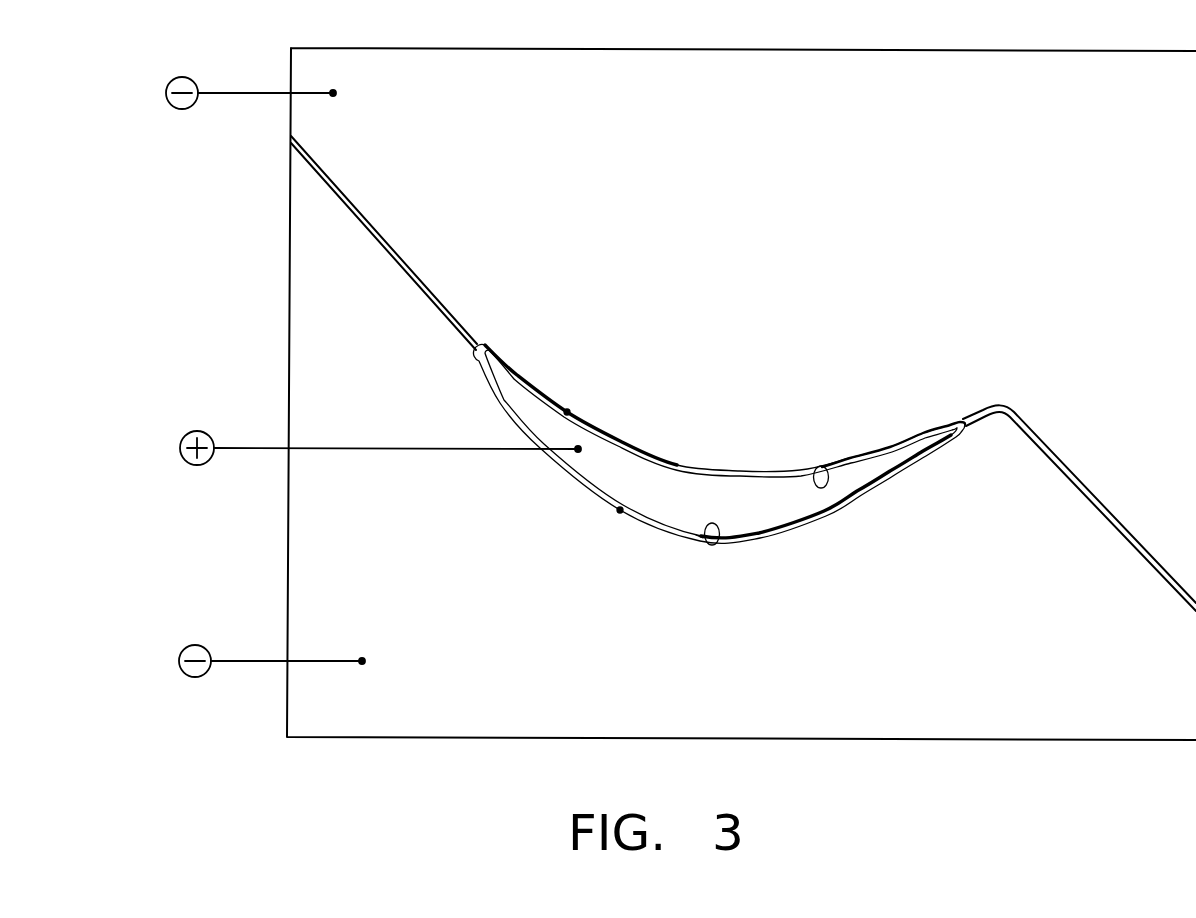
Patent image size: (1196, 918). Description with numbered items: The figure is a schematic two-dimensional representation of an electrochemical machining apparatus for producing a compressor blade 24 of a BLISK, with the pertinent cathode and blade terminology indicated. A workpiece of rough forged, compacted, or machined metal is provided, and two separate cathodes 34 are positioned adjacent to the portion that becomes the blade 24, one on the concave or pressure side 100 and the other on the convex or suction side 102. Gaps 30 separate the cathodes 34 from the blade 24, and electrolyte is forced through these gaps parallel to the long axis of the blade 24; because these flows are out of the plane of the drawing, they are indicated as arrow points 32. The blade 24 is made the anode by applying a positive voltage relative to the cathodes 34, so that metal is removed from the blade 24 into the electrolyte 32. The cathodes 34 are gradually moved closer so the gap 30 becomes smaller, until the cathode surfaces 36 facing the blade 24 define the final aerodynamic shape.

The compressor blade 24 is at (707, 515).
The gap 30 is at (750, 541).
The electrolyte flow arrow points 32 is at (567, 412).
The cathode 34 is at (535, 66).
The cathode surface 36 is at (824, 466).
The concave (pressure) side 100 is at (677, 466).
The convex (suction) side 102 is at (675, 533).